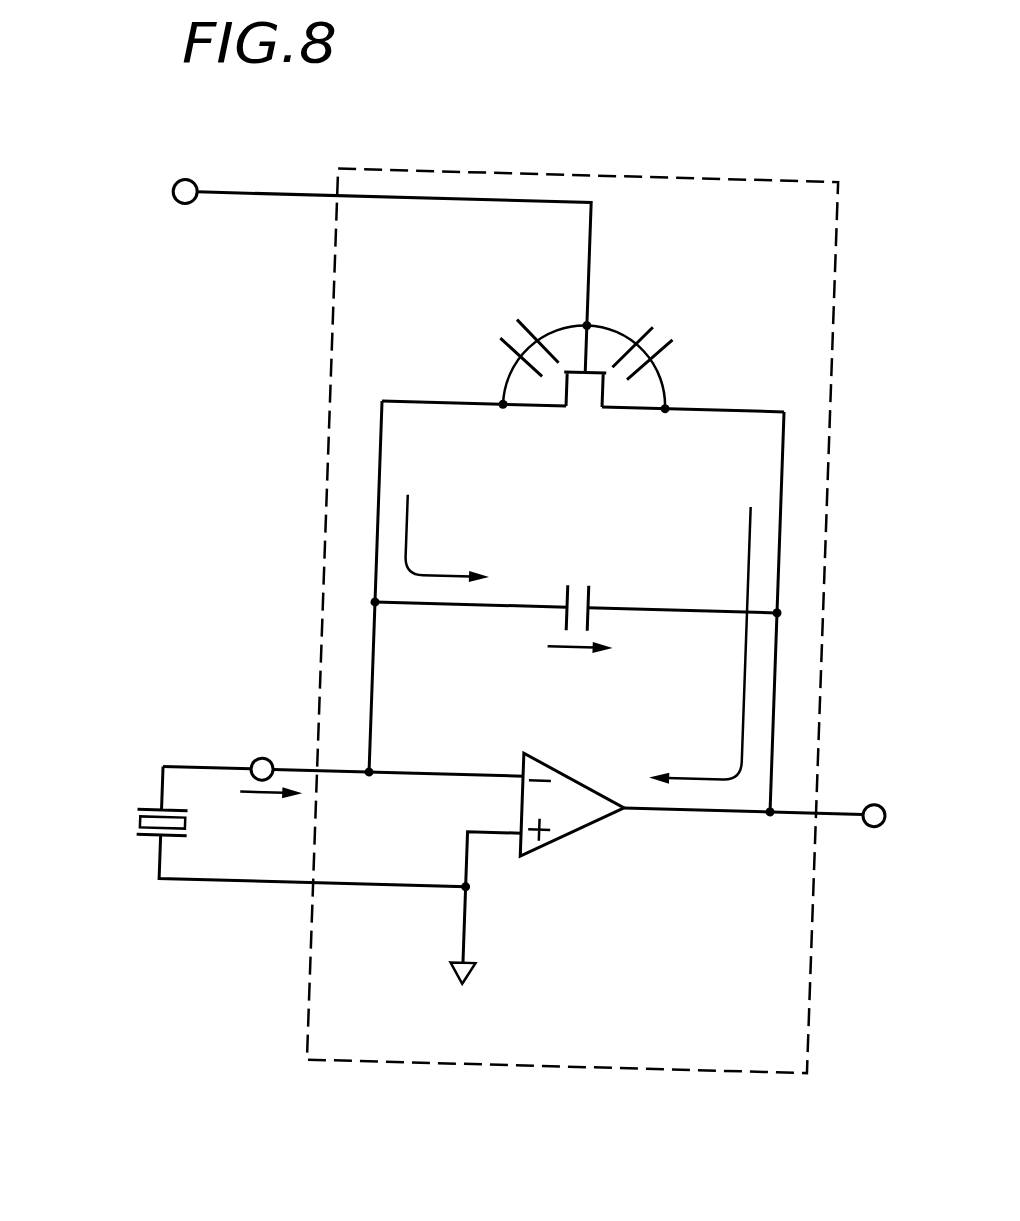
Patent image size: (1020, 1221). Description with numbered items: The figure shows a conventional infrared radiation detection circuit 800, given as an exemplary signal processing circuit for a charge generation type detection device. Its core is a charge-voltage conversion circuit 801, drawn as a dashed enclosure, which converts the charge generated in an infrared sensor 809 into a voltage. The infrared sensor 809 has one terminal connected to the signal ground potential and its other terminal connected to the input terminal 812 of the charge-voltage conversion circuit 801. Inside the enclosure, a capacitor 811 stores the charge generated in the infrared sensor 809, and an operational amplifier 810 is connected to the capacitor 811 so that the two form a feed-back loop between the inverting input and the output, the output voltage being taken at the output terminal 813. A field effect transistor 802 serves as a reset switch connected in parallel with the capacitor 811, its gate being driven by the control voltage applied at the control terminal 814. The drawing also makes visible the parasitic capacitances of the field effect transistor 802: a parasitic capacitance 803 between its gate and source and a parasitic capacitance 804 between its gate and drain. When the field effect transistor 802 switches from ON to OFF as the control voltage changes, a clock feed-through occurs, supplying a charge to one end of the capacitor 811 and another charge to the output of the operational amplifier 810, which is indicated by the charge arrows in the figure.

The infrared radiation detection circuit 800 is at (618, 1140).
The charge-voltage conversion circuit 801 is at (757, 180).
The field effect transistor 802 is at (570, 387).
The parasitic capacitance 803 is at (522, 340).
The parasitic capacitance 804 is at (658, 340).
The infrared sensor 809 is at (138, 818).
The operational amplifier 810 is at (587, 830).
The capacitor 811 is at (565, 592).
The input terminal 812 is at (253, 760).
The output terminal 813 is at (873, 803).
The control terminal 814 is at (189, 180).